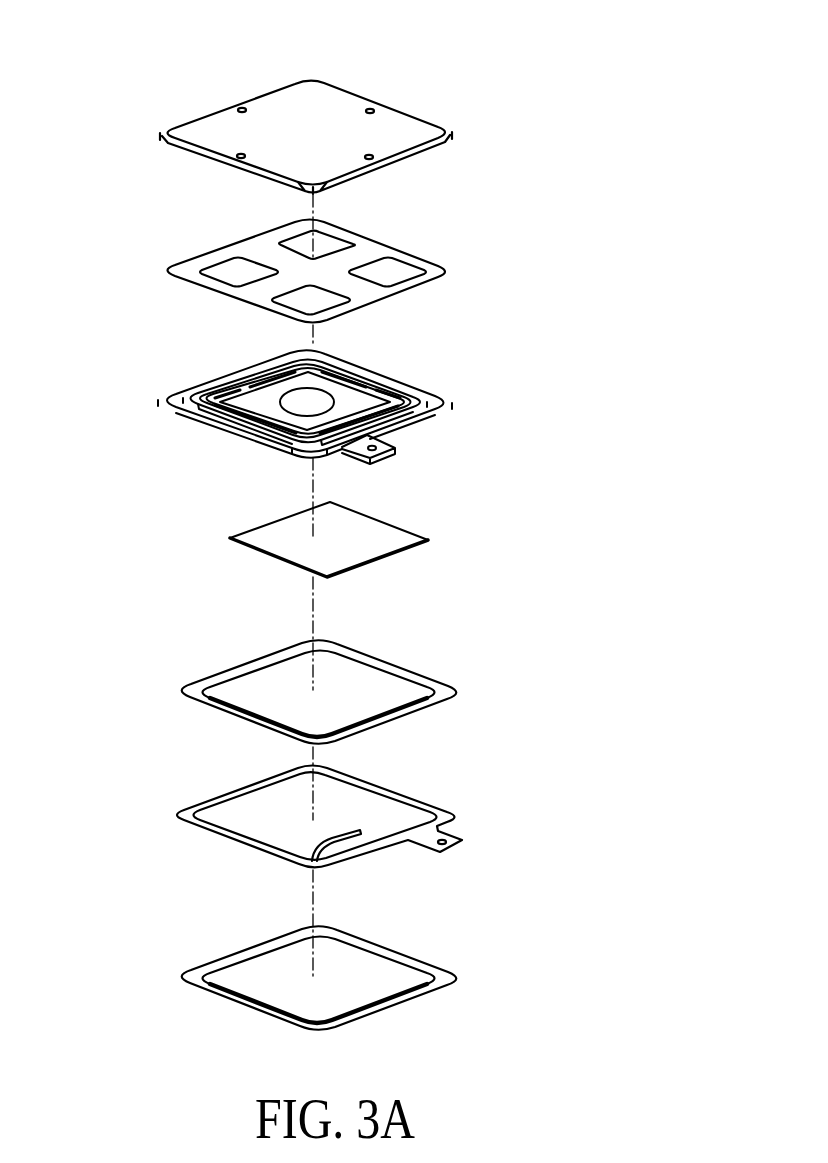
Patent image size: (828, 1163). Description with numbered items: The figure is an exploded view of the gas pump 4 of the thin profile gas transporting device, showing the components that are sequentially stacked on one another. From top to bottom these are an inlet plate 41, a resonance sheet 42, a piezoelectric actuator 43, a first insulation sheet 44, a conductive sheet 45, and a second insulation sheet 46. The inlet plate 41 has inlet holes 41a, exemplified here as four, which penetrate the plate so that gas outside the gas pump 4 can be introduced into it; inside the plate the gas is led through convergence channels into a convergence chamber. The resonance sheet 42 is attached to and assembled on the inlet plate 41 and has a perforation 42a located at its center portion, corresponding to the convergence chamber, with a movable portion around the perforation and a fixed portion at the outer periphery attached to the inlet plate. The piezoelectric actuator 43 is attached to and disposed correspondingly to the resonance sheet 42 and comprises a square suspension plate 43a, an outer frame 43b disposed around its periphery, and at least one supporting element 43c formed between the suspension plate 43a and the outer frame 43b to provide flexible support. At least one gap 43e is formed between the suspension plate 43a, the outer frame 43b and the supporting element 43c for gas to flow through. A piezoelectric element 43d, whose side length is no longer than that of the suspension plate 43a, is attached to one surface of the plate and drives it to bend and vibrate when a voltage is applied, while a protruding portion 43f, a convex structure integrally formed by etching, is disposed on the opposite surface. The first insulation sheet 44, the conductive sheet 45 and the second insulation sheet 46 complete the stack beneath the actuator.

The gas pump 4 is at (324, 37).
The inlet plate 41 is at (331, 118).
The inlet hole 41a is at (242, 107).
The resonance sheet 42 is at (332, 257).
The perforation 42a is at (305, 270).
The piezoelectric actuator 43 is at (378, 451).
The suspension plate 43a is at (373, 384).
The outer frame 43b is at (437, 408).
The supporting element 43c is at (380, 433).
The piezoelectric element 43d is at (401, 539).
The gap 43e is at (403, 400).
The protruding portion 43f is at (313, 402).
The first insulation sheet 44 is at (468, 659).
The conductive sheet 45 is at (463, 790).
The second insulation sheet 46 is at (468, 945).